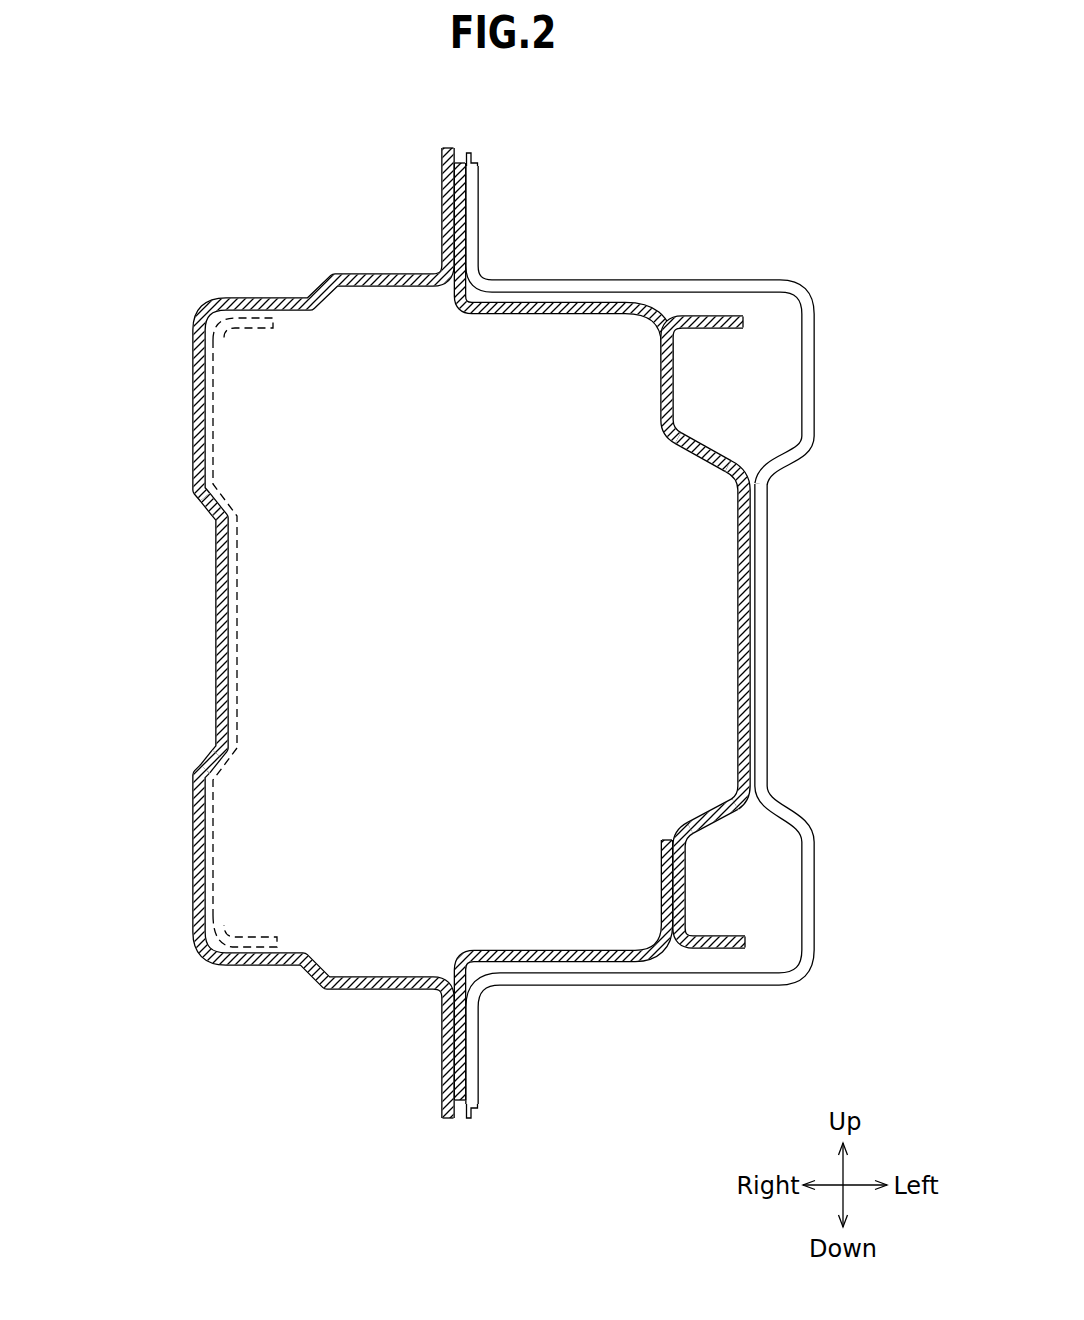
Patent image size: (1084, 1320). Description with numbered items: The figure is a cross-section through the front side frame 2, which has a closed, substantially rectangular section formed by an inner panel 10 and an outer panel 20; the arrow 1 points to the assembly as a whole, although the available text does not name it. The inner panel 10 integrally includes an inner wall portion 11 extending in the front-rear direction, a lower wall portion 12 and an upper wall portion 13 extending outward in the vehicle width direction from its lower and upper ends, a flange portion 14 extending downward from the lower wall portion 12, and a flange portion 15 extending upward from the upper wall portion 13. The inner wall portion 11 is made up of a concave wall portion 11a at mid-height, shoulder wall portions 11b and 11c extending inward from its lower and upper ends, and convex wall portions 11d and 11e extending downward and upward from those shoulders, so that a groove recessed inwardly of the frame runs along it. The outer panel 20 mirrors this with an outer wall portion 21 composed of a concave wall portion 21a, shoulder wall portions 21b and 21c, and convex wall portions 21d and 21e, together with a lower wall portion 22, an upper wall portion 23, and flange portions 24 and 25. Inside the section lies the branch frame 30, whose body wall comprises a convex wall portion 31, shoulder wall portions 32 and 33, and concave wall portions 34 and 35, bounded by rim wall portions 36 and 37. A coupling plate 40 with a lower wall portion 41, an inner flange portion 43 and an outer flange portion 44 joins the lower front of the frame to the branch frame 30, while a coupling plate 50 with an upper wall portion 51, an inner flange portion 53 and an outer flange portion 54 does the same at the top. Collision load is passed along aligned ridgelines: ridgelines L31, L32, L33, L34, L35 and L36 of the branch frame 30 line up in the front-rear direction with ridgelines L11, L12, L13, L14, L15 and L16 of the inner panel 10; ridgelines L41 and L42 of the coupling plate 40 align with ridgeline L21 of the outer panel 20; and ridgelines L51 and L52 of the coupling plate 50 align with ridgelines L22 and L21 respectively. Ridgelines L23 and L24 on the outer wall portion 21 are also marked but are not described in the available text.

The vehicle body structure 1 is at (708, 115).
The front side frame 2 is at (601, 1083).
The inner panel 10 is at (115, 683).
The inner wall portion 11 is at (217, 592).
The concave wall portion 11a is at (216, 646).
The shoulder wall portion 11b is at (210, 756).
The shoulder wall portion 11c is at (213, 509).
The convex wall portion 11d is at (195, 840).
The convex wall portion 11e is at (195, 410).
The lower wall portion 12 is at (343, 992).
The upper wall portion 13 is at (343, 274).
The flange portion 14 is at (442, 1050).
The flange portion 15 is at (441, 218).
The outer panel 20 is at (869, 582).
The outer wall portion 21 is at (769, 573).
The concave wall portion 21a is at (769, 632).
The shoulder wall portion 21b is at (787, 808).
The shoulder wall portion 21c is at (787, 458).
The convex wall portion 21d is at (816, 892).
The convex wall portion 21e is at (815, 378).
The lower wall portion 22 is at (650, 990).
The upper wall portion 23 is at (640, 281).
The flange portion 24 is at (479, 1066).
The flange portion 25 is at (478, 224).
The branch frame 30 is at (660, 590).
The convex wall portion 31 is at (740, 621).
The shoulder wall portion 32 is at (705, 812).
The shoulder wall portion 33 is at (703, 455).
The concave wall portion 34 is at (686, 870).
The concave wall portion 35 is at (676, 396).
The rim wall portion 36 is at (728, 936).
The rim wall portion 37 is at (730, 331).
The coupling plate 40 is at (581, 810).
The lower wall portion 41 is at (540, 950).
The inner flange portion 43 is at (452, 978).
The outer flange portion 44 is at (661, 898).
The coupling plate 50 is at (522, 372).
The upper wall portion 51 is at (536, 316).
The inner flange portion 53 is at (452, 290).
The outer flange portion 54 is at (660, 376).
The ridgeline L11 is at (207, 950).
The ridgeline L12 is at (200, 322).
The ridgeline L13 is at (214, 746).
The ridgeline L14 is at (210, 532).
The ridgeline L15 is at (198, 771).
The ridgeline L16 is at (195, 494).
The ridgeline L21 is at (813, 972).
The ridgeline L22 is at (808, 284).
The bend line L23 is at (767, 788).
The bend line L24 is at (768, 474).
The ridgeline L31 is at (679, 943).
The ridgeline L32 is at (684, 326).
The ridgeline L33 is at (732, 788).
The ridgeline L34 is at (727, 471).
The ridgeline L35 is at (220, 782).
The ridgeline L36 is at (213, 484).
The ridgeline L41 is at (650, 943).
The ridgeline L42 is at (460, 972).
The ridgeline L51 is at (645, 330).
The ridgeline L52 is at (462, 300).